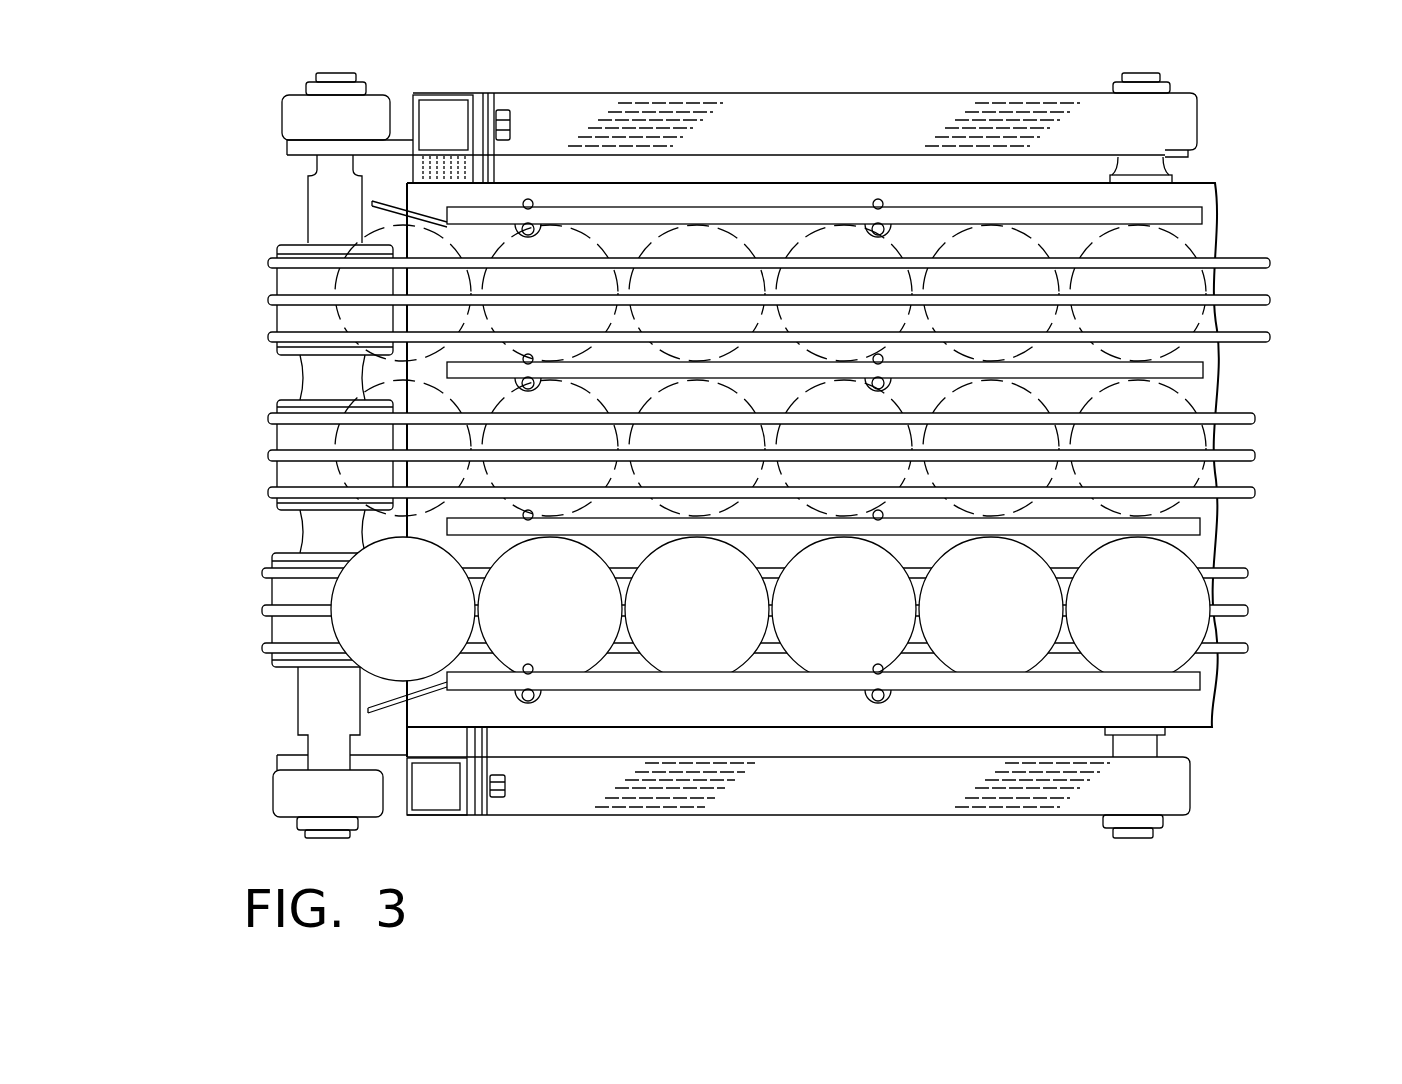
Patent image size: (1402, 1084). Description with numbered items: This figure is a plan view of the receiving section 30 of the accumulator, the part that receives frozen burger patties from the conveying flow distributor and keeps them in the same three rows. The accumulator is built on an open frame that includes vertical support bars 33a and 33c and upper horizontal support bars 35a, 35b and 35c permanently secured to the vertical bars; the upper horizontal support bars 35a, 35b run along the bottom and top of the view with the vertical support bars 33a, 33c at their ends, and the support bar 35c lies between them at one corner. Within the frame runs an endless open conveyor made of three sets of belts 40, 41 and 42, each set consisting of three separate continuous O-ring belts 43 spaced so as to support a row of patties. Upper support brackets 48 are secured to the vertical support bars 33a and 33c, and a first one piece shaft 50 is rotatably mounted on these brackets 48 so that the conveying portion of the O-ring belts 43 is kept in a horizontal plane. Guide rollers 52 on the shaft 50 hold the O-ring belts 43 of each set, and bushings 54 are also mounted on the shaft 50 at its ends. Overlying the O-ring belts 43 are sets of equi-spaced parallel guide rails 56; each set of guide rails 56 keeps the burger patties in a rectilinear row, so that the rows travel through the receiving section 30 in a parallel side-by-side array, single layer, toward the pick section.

The receiving section 30 is at (695, 825).
The vertical support bar 33a is at (433, 794).
The vertical support bar 33c is at (452, 110).
The upper horizontal support bar 35a is at (833, 802).
The upper horizontal support bar 35b is at (787, 138).
The upper horizontal support bar 35c is at (453, 740).
The set of belts 40 is at (158, 555).
The set of belts 41 is at (158, 393).
The set of belts 42 is at (158, 245).
The O-ring belts 43 is at (276, 333).
The upper support brackets 48 is at (290, 148).
The first one piece shaft 50 is at (317, 752).
The guide rollers 52 is at (283, 281).
The bushings 54 is at (300, 106).
The guide rails 56 is at (1203, 214).